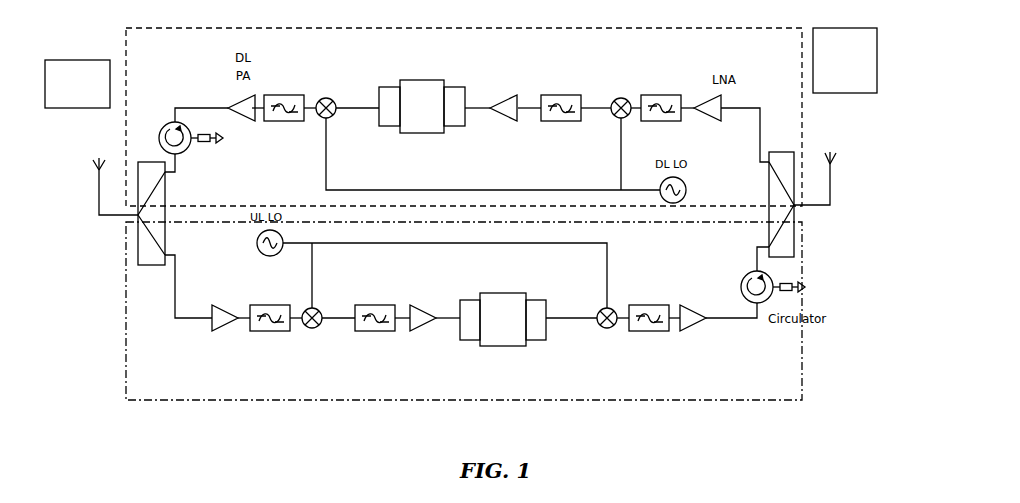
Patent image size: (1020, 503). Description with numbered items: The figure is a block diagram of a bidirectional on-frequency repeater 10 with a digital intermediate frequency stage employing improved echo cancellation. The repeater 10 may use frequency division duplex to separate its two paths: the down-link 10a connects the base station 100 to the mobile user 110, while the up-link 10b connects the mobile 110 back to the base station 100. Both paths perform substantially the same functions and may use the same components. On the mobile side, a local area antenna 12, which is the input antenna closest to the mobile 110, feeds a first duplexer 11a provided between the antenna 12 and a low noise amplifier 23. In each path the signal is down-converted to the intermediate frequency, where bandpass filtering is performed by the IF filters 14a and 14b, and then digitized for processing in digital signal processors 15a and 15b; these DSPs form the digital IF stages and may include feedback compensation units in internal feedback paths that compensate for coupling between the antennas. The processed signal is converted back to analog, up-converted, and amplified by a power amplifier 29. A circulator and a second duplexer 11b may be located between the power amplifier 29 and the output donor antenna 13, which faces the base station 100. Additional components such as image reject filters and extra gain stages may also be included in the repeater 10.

The on-frequency repeater 10 is at (464, 237).
The down-link path 10a is at (464, 117).
The up-link path 10b is at (464, 311).
The first duplexer 11a is at (138, 219).
The second duplexer 11b is at (798, 222).
The local area antenna 12 is at (97, 171).
The donor antenna 13 is at (838, 158).
The IF filter 14a is at (562, 122).
The IF filter 14b is at (373, 304).
The digital signal processor 15a is at (425, 134).
The digital signal processor 15b is at (500, 293).
The low noise amplifier 23 is at (215, 326).
The power amplifier 29 is at (692, 331).
The base station 100 is at (842, 83).
The mobile user 110 is at (82, 106).